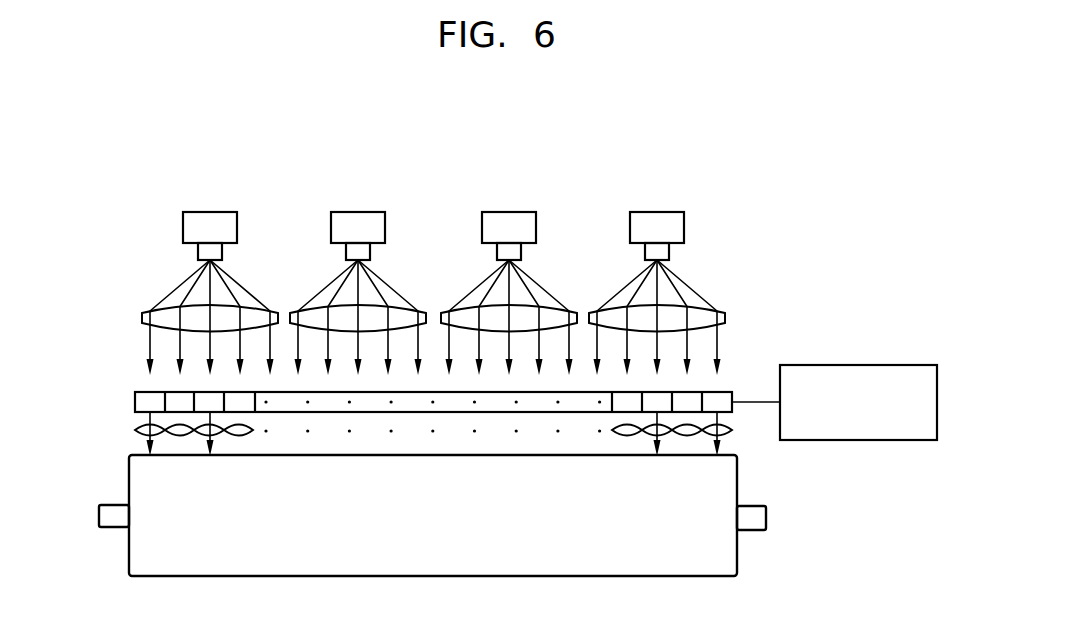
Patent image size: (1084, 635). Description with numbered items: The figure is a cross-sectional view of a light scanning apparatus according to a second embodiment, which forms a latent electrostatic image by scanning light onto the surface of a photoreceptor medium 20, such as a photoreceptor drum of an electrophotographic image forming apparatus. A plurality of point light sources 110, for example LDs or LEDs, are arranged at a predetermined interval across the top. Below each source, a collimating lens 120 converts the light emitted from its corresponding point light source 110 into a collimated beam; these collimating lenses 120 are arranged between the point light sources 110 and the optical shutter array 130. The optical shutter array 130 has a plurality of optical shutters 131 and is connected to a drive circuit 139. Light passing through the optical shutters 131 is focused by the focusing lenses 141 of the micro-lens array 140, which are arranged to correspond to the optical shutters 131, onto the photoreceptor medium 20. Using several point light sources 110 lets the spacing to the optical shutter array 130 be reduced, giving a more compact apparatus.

The point light source 110 is at (223, 222).
The collimating lens 120 is at (142, 313).
The optical shutter array 130 is at (742, 386).
The optical shutter 131 is at (177, 398).
The drive circuit 139 is at (863, 365).
The micro-lens array 140 is at (736, 438).
The focusing lens 141 is at (148, 430).
The photoreceptor medium 20 is at (718, 563).